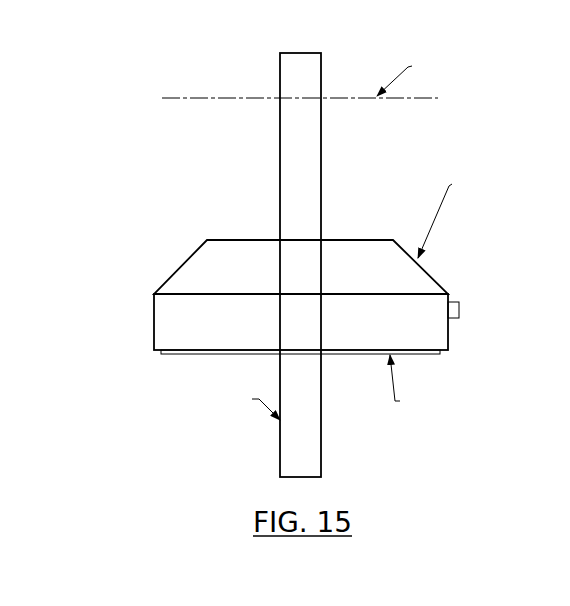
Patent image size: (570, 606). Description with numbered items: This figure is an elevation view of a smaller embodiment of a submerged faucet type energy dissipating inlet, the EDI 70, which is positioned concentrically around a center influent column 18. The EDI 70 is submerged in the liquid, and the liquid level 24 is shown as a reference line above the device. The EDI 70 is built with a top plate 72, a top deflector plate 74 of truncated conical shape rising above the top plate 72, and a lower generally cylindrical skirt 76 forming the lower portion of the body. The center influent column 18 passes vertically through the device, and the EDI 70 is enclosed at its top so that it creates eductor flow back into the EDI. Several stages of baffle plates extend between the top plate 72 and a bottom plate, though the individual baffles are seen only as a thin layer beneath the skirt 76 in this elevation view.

The center influent column 18 is at (321, 150).
The liquid level 24 is at (217, 98).
The EDI 70 is at (178, 213).
The top plate 72 is at (349, 235).
The top deflector plate 74 is at (340, 300).
The lower generally cylindrical skirt 76 is at (487, 296).